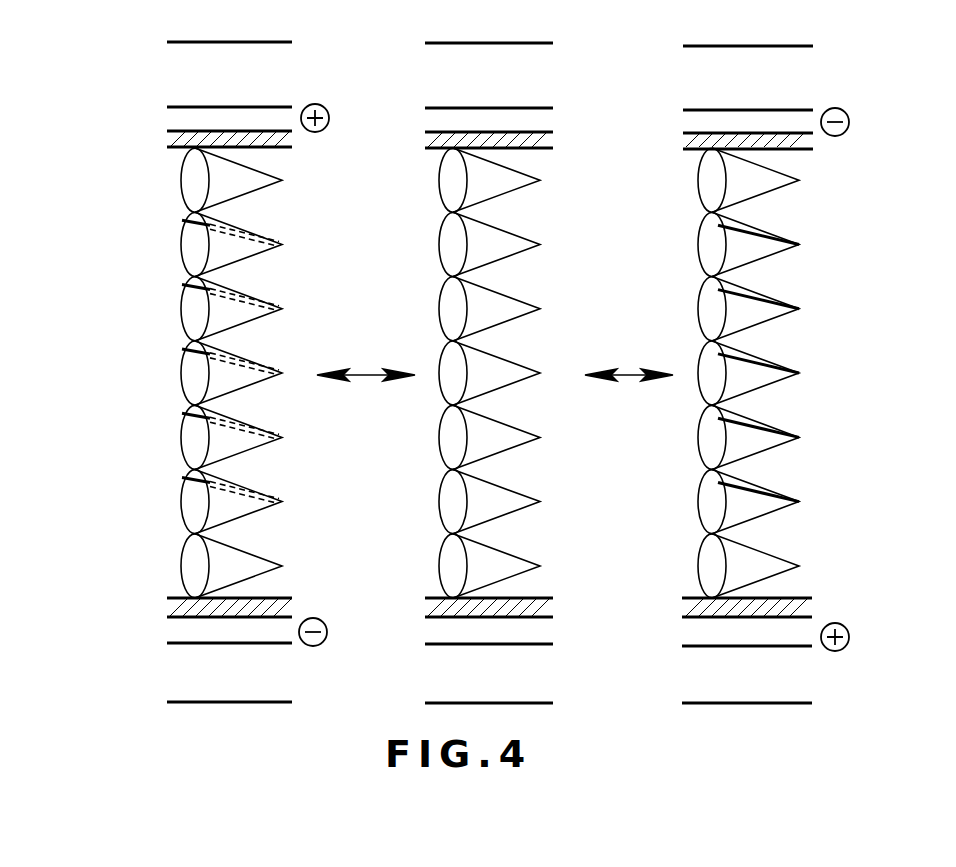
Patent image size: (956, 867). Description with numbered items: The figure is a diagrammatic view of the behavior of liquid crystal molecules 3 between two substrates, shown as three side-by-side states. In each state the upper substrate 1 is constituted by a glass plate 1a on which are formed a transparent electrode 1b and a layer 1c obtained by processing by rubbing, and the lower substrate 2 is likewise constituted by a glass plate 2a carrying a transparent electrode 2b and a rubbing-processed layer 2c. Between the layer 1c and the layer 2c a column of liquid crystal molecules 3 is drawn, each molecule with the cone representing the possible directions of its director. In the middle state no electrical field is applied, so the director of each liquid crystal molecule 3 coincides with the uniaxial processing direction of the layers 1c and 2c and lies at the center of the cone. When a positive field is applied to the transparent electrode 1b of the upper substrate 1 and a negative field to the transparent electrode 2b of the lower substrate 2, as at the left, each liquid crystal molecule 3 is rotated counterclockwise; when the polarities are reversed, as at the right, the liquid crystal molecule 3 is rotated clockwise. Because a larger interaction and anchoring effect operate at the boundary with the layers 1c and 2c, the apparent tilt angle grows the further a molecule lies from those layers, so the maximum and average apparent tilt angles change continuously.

The upper substrate 1 is at (105, 62).
The glass plate 1a is at (176, 71).
The transparent electrode 1b is at (177, 116).
The layer 1c is at (167, 137).
The lower substrate 2 is at (105, 572).
The glass plate 2a is at (175, 678).
The transparent electrode 2b is at (175, 628).
The layer 2c is at (167, 610).
The liquid crystal molecule 3 is at (288, 172).